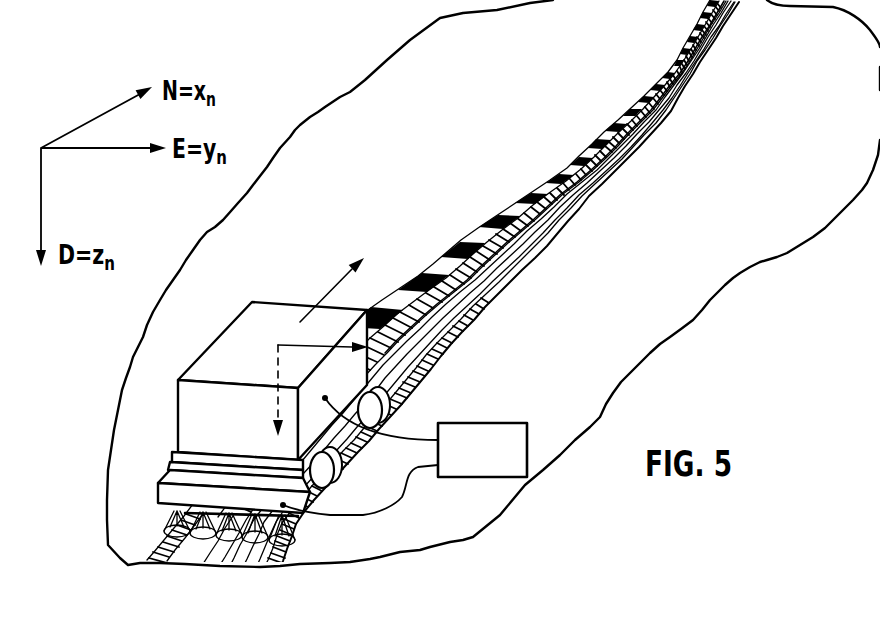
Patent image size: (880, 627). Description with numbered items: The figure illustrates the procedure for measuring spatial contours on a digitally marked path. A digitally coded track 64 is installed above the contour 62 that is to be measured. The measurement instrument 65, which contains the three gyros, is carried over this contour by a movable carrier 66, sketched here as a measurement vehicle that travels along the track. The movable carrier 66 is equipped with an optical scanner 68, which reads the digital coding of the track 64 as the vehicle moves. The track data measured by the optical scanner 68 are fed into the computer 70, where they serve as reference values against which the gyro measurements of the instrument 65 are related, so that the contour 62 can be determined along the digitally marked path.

The contour 62 is at (662, 142).
The digitally coded track 64 is at (527, 207).
The measurement instrument 65 is at (262, 327).
The movable carrier 66 is at (175, 468).
The optical scanner 68 is at (222, 497).
The computer 70 is at (480, 446).